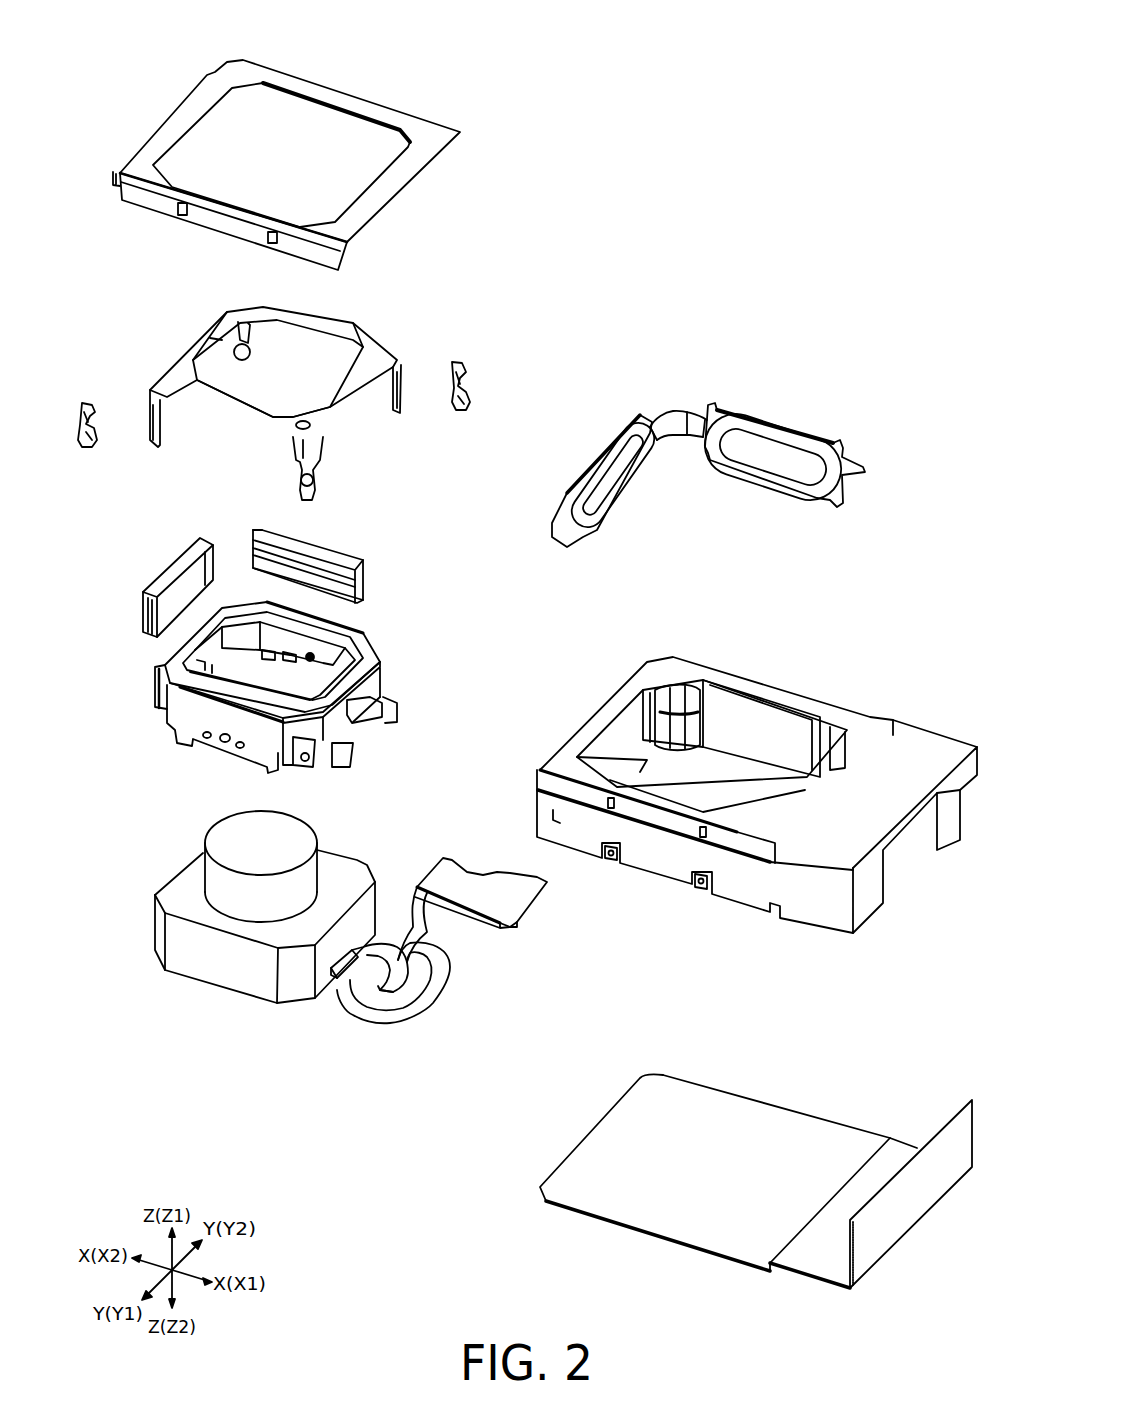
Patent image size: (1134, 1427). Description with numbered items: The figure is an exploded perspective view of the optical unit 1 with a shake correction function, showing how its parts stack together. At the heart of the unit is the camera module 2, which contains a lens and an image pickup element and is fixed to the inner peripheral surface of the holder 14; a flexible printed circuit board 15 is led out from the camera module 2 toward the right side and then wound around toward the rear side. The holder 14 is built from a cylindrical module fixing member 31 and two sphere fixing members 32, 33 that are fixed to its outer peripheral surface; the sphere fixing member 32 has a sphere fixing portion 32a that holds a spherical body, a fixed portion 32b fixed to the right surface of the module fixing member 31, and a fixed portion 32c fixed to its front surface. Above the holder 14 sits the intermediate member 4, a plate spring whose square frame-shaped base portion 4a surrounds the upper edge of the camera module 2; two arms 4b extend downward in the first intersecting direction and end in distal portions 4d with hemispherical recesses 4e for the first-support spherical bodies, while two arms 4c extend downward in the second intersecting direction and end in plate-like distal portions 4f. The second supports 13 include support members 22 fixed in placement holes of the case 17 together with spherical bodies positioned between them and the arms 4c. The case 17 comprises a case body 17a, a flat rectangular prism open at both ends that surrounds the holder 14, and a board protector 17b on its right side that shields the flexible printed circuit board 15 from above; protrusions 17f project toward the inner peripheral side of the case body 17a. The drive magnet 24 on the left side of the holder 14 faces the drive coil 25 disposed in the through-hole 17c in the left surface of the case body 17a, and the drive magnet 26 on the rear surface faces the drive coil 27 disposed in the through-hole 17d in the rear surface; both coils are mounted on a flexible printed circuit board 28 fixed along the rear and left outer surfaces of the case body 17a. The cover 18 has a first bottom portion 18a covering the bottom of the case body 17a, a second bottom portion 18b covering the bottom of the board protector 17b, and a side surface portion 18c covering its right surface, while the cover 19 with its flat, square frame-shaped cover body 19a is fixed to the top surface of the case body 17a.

The optical unit with a shake correction function 1 is at (713, 77).
The camera module 2 is at (216, 988).
The intermediate member 4 is at (279, 395).
The base portion 4a is at (273, 368).
The arms 4b is at (320, 412).
The arms 4c is at (279, 435).
The distal portions 4d is at (250, 358).
The hemispherical recesses 4e is at (298, 479).
The distal portions 4f is at (153, 449).
The second supports 13 is at (320, 417).
The holder 14 is at (284, 713).
The flexible printed circuit board 15 is at (395, 1025).
The case 17 is at (747, 769).
The case body 17a is at (577, 733).
The board protector 17b is at (930, 730).
The through-hole 17c is at (620, 730).
The through-hole 17d is at (757, 703).
The protrusions 17f is at (682, 680).
The cover 18 is at (756, 1202).
The first bottom portion 18a is at (637, 1230).
The second bottom portion 18b is at (810, 1277).
The side surface portion 18c is at (948, 1125).
The cover 19 is at (286, 136).
The cover body 19a is at (227, 58).
The support members 22 is at (88, 400).
The drive magnet 24 is at (141, 610).
The drive coil 25 is at (620, 505).
The drive magnet 26 is at (368, 571).
The drive coil 27 is at (767, 485).
The flexible printed circuit board 28 is at (708, 460).
The module fixing member 31 is at (272, 662).
The sphere fixing member 32 is at (295, 752).
The sphere fixing portion 32a is at (307, 770).
The fixed portion 32b is at (385, 687).
The fixed portion 32c is at (181, 742).
The sphere fixing member 33 is at (155, 692).